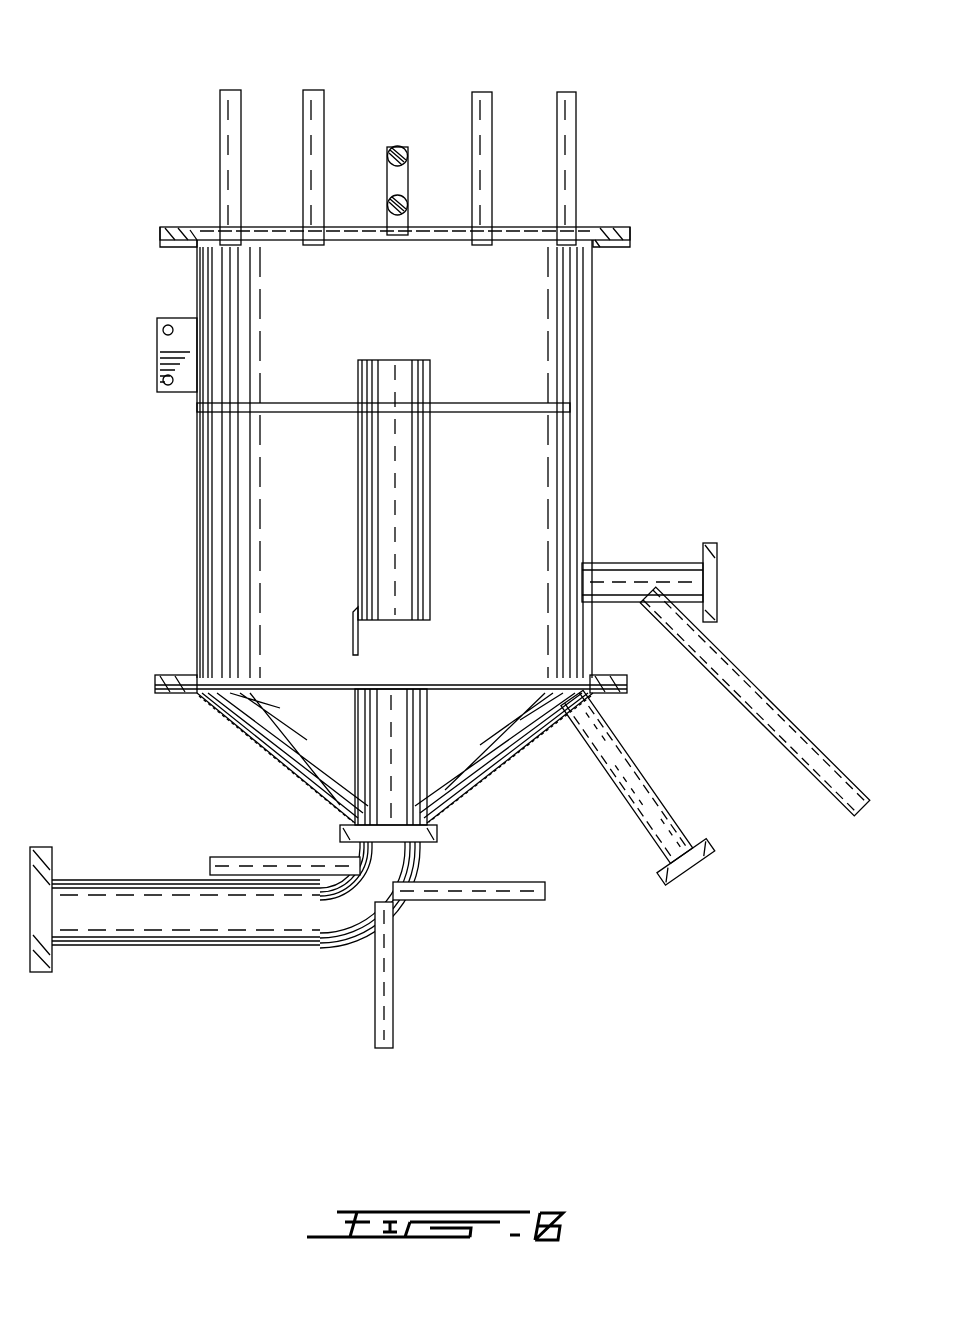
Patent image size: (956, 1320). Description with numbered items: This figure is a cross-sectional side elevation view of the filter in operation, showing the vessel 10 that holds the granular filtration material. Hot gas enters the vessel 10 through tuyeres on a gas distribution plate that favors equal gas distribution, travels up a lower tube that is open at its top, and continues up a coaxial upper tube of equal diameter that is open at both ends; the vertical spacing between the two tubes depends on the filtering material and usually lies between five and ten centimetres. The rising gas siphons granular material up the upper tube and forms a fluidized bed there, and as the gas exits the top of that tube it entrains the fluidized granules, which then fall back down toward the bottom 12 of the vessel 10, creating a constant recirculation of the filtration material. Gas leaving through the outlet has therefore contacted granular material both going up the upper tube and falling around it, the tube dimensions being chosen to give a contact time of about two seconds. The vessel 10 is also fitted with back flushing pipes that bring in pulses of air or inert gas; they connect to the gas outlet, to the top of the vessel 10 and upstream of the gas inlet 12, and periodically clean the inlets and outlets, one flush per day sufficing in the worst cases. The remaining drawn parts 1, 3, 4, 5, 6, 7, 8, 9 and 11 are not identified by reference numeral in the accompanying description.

The vessel housing 1 is at (250, 733).
The central outlet pipe 3 is at (430, 745).
The central cylinder 4 is at (358, 562).
The deflector tab 5 is at (353, 640).
The support bar 6 is at (310, 412).
The side nozzle 7 is at (630, 562).
The inclined pipe 8 is at (790, 727).
The pipe 9 is at (387, 963).
The vessel 10 is at (670, 840).
The elbow outlet pipe 11 is at (428, 893).
The bottom 12 is at (313, 90).